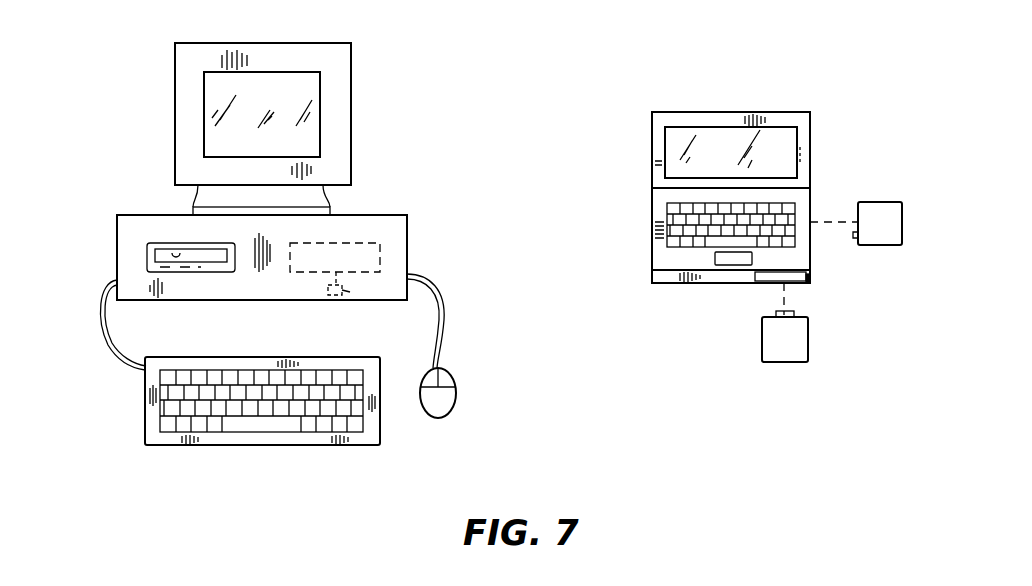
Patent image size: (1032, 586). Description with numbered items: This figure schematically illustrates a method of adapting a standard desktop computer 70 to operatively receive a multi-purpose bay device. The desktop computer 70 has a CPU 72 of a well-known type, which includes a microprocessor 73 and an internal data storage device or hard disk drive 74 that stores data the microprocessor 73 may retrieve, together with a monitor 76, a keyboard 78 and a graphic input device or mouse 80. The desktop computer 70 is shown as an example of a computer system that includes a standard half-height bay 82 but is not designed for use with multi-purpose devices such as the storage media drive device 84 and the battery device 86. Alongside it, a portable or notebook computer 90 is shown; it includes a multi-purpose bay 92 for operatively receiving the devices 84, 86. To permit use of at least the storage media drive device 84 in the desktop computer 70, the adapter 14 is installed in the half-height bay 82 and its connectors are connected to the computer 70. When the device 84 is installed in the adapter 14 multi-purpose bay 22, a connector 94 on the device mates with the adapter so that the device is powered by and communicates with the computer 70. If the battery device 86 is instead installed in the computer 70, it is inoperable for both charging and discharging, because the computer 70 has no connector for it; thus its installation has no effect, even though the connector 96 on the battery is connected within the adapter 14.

The desktop computer 70 is at (115, 121).
The monitor 76 is at (351, 108).
The CPU 72 is at (391, 215).
The adapter 14 is at (147, 255).
The multi-purpose bay 22 is at (176, 252).
The half-height bay 82 is at (228, 271).
The hard disk drive 74 is at (380, 250).
The microprocessor 73 is at (348, 290).
The keyboard 78 is at (145, 415).
The mouse 80 is at (457, 402).
The notebook computer 90 is at (839, 92).
The multi-purpose bay 92 is at (798, 283).
The battery device 86 is at (885, 202).
The connector 96 is at (856, 236).
The storage media drive device 84 is at (762, 342).
The connector 94 is at (798, 313).